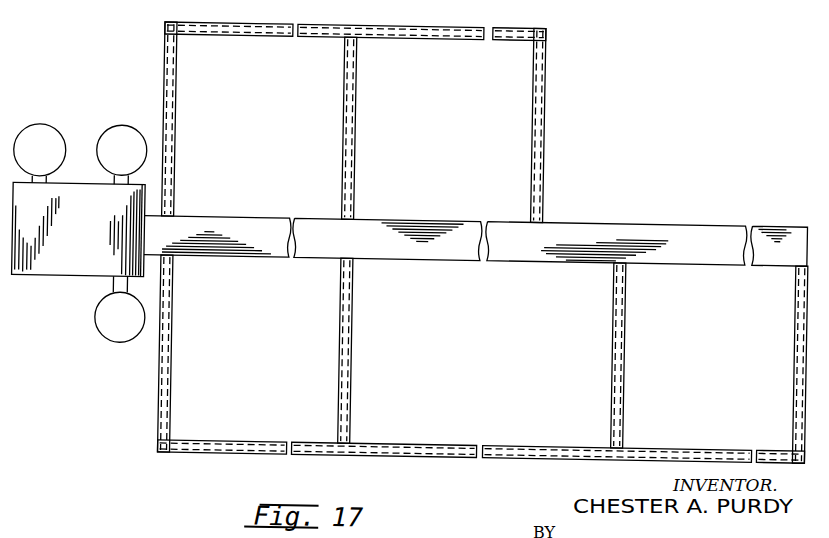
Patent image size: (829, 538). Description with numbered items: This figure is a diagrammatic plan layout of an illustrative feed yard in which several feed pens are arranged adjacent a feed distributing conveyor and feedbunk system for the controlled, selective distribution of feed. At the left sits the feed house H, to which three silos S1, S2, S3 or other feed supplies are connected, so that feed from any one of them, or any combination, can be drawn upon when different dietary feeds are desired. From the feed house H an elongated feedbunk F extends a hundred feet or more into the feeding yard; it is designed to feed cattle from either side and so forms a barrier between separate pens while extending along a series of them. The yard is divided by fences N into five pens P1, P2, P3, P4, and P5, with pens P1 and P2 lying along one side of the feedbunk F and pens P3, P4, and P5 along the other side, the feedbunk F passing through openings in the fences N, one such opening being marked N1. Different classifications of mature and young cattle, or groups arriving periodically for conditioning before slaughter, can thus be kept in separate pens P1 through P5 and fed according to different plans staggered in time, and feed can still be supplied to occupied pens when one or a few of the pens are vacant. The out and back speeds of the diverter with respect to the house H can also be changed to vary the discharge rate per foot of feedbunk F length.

The feedbunk F is at (733, 227).
The feed house H is at (88, 244).
The silo S1 is at (53, 168).
The silo S2 is at (135, 167).
The silo S3 is at (141, 334).
The pen P1 is at (262, 126).
The pen P2 is at (450, 127).
The pen P3 is at (266, 367).
The pen P4 is at (486, 368).
The pen P5 is at (733, 370).
The fences N is at (521, 36).
The partition wall opening N1 is at (356, 273).